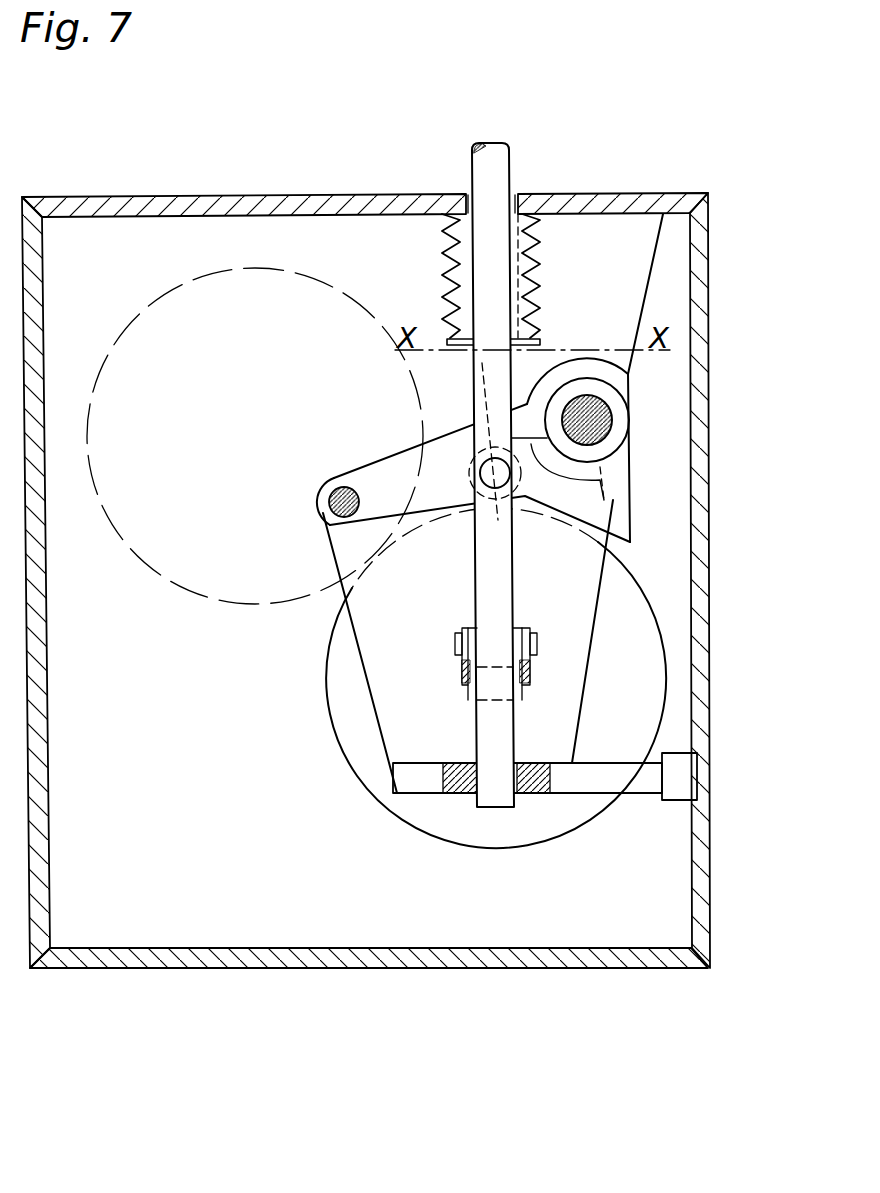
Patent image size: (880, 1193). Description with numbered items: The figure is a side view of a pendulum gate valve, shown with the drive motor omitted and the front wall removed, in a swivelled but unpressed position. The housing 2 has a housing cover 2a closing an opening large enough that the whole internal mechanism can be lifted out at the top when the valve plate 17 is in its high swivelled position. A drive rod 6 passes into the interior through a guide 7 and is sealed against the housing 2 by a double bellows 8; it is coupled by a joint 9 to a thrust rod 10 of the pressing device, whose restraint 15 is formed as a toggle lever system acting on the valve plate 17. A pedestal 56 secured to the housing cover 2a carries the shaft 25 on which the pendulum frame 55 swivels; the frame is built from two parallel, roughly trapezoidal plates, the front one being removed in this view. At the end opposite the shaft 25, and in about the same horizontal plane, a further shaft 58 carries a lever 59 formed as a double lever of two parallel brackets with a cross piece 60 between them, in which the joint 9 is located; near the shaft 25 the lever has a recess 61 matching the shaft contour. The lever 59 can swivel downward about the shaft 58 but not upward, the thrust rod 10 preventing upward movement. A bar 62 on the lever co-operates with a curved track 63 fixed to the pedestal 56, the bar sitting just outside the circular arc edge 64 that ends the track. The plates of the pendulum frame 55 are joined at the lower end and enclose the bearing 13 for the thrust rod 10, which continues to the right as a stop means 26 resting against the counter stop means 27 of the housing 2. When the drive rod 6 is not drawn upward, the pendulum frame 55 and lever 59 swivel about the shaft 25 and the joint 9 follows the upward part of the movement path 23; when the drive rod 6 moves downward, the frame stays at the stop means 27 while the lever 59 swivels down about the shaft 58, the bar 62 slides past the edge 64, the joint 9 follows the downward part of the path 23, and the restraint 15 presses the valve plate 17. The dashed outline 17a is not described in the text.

The housing 2 is at (366, 579).
The housing cover 2a is at (345, 205).
The drive rod 6 is at (500, 167).
The guide 7 is at (521, 204).
The double bellows 8 is at (445, 258).
The joint 9 is at (523, 433).
The thrust rod 10 is at (500, 583).
The bearing 13 is at (533, 795).
The restraint 15 is at (545, 645).
The valve plate 17 is at (638, 723).
The disc in displaced position 17a is at (133, 318).
The movement path 23 is at (474, 393).
The shaft 25 is at (612, 420).
The stop means 26 is at (630, 785).
The counter stop means 27 is at (677, 787).
The pendulum frame 55 is at (413, 590).
The pedestal 56 is at (632, 257).
The further shaft 58 is at (347, 475).
The lever 59 is at (327, 518).
The cross piece 60 is at (478, 483).
The recess 61 is at (560, 430).
The bar 62 is at (605, 468).
The curved track 63 is at (632, 548).
The edge 64 is at (608, 512).